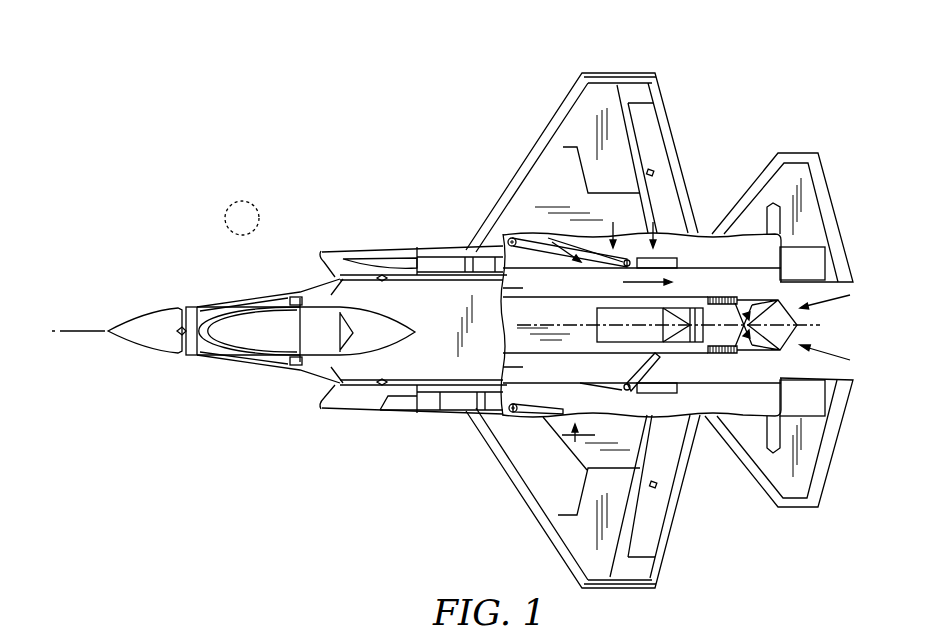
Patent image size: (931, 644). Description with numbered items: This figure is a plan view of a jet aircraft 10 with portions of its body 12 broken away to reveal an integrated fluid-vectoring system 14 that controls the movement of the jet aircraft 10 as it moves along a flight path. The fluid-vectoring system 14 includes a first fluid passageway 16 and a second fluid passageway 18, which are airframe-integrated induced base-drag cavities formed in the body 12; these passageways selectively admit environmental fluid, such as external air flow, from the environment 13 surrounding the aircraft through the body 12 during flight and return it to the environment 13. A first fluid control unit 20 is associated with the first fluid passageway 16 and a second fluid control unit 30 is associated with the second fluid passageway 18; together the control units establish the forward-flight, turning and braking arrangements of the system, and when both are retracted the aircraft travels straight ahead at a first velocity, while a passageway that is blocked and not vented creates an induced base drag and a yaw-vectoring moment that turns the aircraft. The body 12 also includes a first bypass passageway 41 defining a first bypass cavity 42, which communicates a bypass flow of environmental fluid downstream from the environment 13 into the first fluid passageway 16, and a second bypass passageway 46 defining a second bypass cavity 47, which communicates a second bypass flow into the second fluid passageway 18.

The jet aircraft 10 is at (502, 117).
The body 12 is at (372, 365).
The environment 13 is at (234, 228).
The fluid-vectoring system 14 is at (655, 236).
The first fluid passageway 16 is at (706, 248).
The second fluid passageway 18 is at (703, 420).
The first fluid control unit 20 is at (615, 236).
The second fluid control unit 30 is at (577, 428).
The first bypass passageway 41 is at (503, 272).
The first bypass cavity 42 is at (480, 290).
The second bypass passageway 46 is at (510, 408).
The second bypass cavity 47 is at (500, 366).